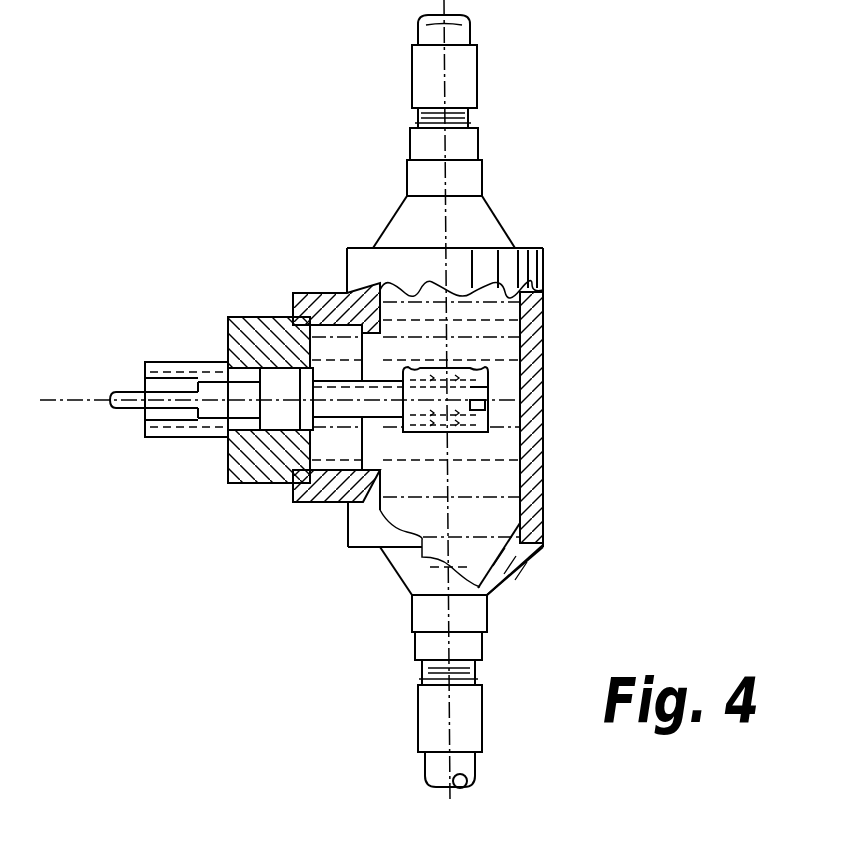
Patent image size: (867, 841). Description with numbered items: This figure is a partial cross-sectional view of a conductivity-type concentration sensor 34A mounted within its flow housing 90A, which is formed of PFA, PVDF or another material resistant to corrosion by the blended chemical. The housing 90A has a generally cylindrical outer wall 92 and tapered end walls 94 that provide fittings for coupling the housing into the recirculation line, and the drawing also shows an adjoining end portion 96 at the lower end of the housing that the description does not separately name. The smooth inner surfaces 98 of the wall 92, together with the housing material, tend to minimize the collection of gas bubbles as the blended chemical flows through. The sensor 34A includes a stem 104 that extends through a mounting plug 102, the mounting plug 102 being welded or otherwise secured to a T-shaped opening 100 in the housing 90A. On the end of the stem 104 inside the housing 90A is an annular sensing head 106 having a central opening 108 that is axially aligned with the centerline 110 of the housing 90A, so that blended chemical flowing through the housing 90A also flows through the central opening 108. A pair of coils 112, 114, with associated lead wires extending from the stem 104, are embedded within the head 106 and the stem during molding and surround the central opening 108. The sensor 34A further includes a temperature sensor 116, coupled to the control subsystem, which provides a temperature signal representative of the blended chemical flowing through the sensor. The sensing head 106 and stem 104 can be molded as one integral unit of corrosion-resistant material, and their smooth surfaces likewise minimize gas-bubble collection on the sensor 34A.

The conductivity sensor 34A is at (461, 345).
The flow housing 90A is at (343, 248).
The cylindrical outer wall 92 is at (545, 278).
The tapered end walls 94 is at (490, 572).
The lower connector body 96 is at (468, 644).
The smooth inner surfaces 98 is at (513, 323).
The T-shaped opening 100 is at (332, 487).
The mounting plug 102 is at (247, 460).
The stem 104 is at (212, 390).
The sensing head 106 is at (500, 394).
The central opening 108 is at (447, 362).
The centerline 110 is at (452, 613).
The coil 112 is at (488, 429).
The coil 114 is at (490, 391).
The temperature sensor 116 is at (487, 404).